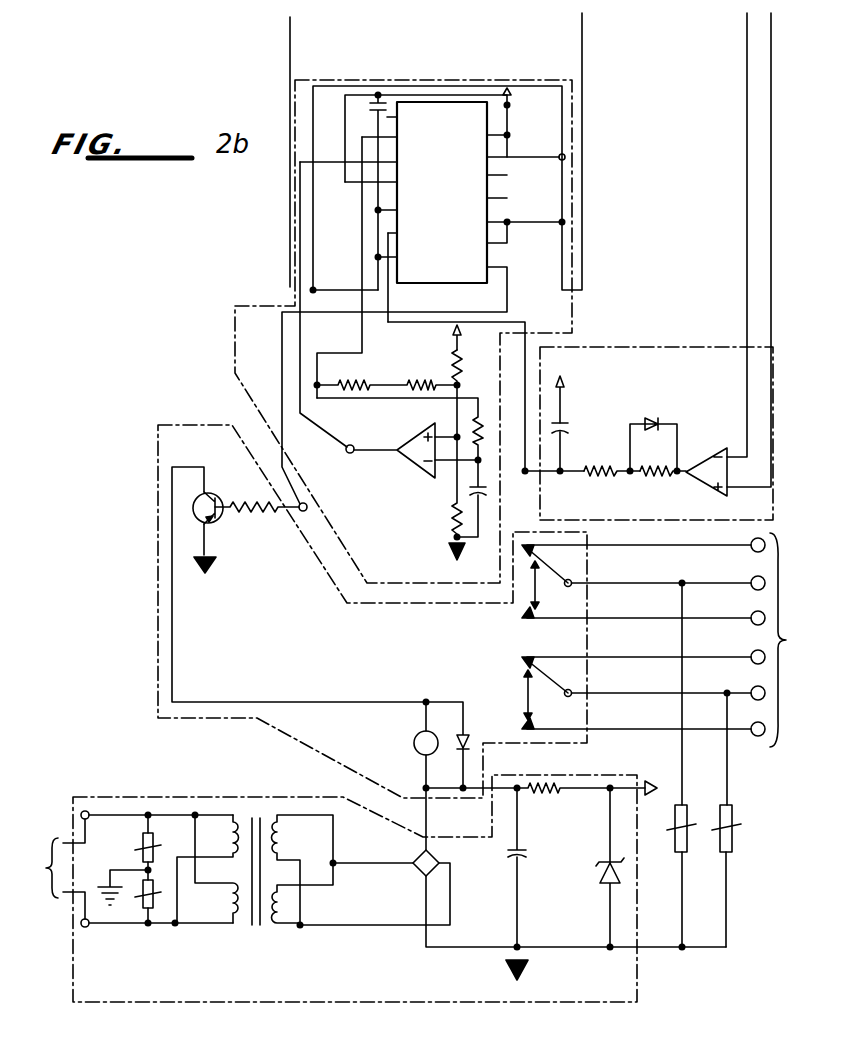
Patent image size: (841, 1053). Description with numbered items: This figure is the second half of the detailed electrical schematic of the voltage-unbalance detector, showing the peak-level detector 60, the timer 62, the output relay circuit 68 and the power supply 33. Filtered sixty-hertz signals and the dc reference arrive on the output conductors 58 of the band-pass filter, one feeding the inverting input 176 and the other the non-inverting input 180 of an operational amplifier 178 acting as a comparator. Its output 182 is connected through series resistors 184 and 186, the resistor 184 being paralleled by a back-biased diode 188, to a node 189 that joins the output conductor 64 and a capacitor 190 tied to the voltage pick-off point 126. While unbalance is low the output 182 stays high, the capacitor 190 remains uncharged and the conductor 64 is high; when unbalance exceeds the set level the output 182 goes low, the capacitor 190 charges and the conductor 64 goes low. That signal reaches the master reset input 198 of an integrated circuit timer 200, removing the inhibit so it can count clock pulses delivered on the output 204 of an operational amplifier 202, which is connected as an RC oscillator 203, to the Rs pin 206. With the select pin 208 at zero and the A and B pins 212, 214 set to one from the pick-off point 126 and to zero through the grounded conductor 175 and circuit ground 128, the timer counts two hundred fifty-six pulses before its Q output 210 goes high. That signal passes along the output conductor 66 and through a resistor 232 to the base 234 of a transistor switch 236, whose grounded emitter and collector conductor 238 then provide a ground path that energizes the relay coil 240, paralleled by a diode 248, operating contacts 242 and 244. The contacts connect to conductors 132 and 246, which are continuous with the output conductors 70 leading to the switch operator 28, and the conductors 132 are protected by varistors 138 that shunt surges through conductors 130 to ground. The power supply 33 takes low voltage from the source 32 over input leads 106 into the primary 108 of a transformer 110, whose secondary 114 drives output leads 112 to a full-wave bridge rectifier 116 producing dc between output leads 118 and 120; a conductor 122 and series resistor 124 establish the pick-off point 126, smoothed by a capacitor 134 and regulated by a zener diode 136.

The switch operator 28 is at (788, 640).
The source of voltage 32 is at (55, 869).
The power supply 33 is at (198, 999).
The output of the band-pass filter 58 is at (747, 76).
The peak-level detector 60 is at (615, 345).
The timer 62 is at (233, 337).
The output conductor of the peak-level detector 64 is at (525, 372).
The output conductor of the timer 66 is at (284, 456).
The output relay circuit 68 is at (314, 755).
The output conductors 70 is at (728, 547).
The input leads 106 is at (98, 811).
The primary 108 is at (232, 816).
The transformer 110 is at (250, 926).
The output leads 112 is at (382, 860).
The secondary 114 is at (277, 816).
The full-wave bridge rectifier 116 is at (439, 853).
The output lead 118 is at (426, 832).
The output lead 120 is at (478, 950).
The conductor 122 is at (507, 792).
The series resistor 124 is at (562, 786).
The voltage pick-off point 126 is at (508, 96).
The circuit ground 128 is at (454, 552).
The conductors 130 is at (726, 888).
The conductors 132 is at (634, 626).
The capacitor 134 is at (527, 856).
The zener diode 136 is at (599, 876).
The varistors 138 is at (727, 805).
The conductor 175 is at (583, 211).
The inverting input 176 is at (740, 450).
The operational amplifier 178 is at (701, 488).
The non-inverting input 180 is at (745, 488).
The output 182 is at (678, 474).
The resistor 184 is at (670, 466).
The resistor 186 is at (615, 466).
The diode 188 is at (656, 419).
The node 189 is at (560, 474).
The capacitor 190 is at (562, 428).
The input 198 is at (440, 236).
The integrated circuit timer 200 is at (410, 101).
The operational amplifier 202 is at (414, 468).
The RC oscillator 203 is at (374, 385).
The output 204 is at (300, 342).
The Rs pin 206 is at (440, 163).
The Q/Q-bar select pin 208 is at (477, 241).
The Q output 210 is at (490, 268).
The A pin 212 is at (490, 176).
The B pin 214 is at (490, 158).
The resistor 232 is at (285, 512).
The base 234 is at (252, 490).
The transistor switch 236 is at (217, 513).
The conductor 238 is at (245, 702).
The relay coil 240 is at (415, 741).
The contact 242 is at (547, 581).
The contact 244 is at (538, 693).
The conductors 246 is at (618, 617).
The diode 248 is at (457, 737).